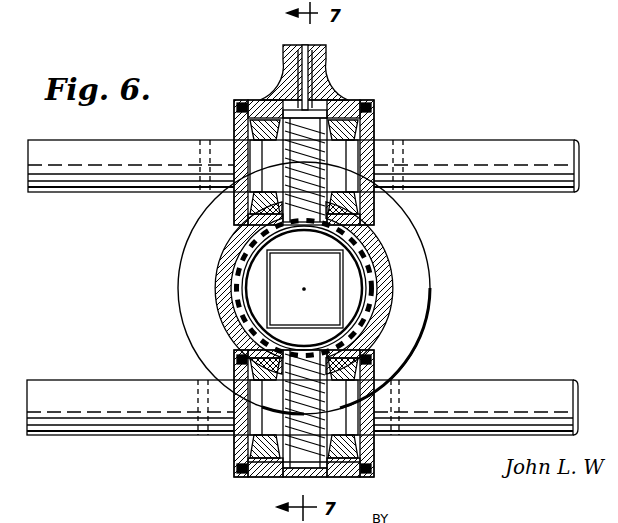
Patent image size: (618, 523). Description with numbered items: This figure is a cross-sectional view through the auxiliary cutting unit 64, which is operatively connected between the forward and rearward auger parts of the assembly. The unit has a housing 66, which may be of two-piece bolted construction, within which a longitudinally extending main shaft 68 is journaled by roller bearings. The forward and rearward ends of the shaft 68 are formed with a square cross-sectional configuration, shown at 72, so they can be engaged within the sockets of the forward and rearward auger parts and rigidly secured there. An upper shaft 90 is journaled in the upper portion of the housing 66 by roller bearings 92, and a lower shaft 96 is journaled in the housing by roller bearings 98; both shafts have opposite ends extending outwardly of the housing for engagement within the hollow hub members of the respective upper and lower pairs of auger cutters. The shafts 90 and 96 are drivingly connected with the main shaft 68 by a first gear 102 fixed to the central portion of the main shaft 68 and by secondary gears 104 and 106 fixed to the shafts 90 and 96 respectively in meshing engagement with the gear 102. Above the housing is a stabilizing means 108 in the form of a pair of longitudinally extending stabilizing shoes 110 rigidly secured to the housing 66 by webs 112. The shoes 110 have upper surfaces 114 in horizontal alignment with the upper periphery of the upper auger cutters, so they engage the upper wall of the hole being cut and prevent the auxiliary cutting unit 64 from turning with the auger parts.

The auxiliary cutting unit 64 is at (362, 60).
The housing 66 is at (223, 278).
The shaft 68 is at (305, 243).
The square cross-sectional shaft ends 72 is at (318, 290).
The upper shaft 90 is at (350, 105).
The roller bearings 92 is at (268, 100).
The shaft 96 is at (263, 425).
The roller bearings 98 is at (368, 375).
The first gear 102 is at (242, 320).
The secondary gear 104 is at (300, 153).
The secondary gear 106 is at (374, 468).
The stabilizing means 108 is at (284, 48).
The stabilizing shoes 110 is at (318, 62).
The webs 112 is at (314, 70).
The upper surfaces 114 is at (299, 66).